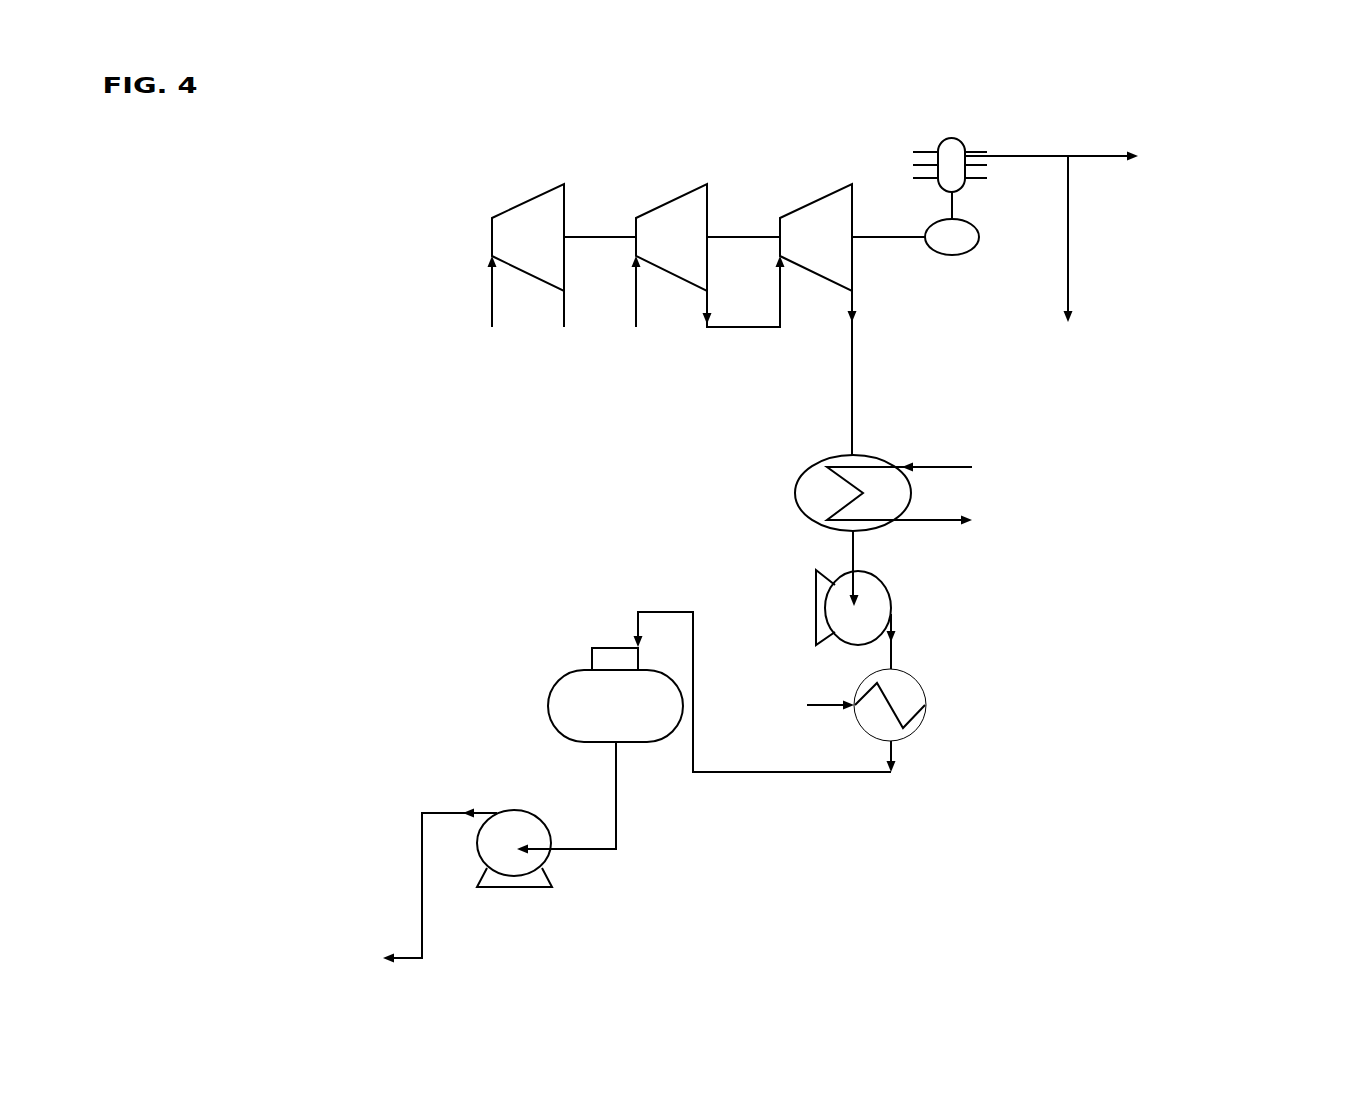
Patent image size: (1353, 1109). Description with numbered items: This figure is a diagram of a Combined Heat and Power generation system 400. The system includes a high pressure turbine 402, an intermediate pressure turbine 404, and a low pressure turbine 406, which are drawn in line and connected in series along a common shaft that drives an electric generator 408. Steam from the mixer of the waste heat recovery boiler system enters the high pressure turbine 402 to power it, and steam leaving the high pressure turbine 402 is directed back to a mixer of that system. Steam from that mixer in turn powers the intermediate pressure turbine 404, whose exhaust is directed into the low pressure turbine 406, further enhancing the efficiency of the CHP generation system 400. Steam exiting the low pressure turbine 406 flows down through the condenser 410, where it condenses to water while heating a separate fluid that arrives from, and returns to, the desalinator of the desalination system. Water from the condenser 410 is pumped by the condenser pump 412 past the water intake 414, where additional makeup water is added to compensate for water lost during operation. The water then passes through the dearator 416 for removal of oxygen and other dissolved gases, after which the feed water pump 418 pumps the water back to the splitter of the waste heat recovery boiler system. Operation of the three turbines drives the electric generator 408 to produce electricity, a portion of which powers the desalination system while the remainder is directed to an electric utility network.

The CHP generation system 400 is at (214, 199).
The high pressure turbine 402 is at (500, 210).
The intermediate pressure turbine 404 is at (653, 210).
The low pressure turbine 406 is at (793, 210).
The electric generator 408 is at (947, 257).
The condenser 410 is at (868, 452).
The condenser pump 412 is at (890, 587).
The water intake 414 is at (927, 697).
The dearator 416 is at (635, 745).
The feed water pump 418 is at (527, 888).